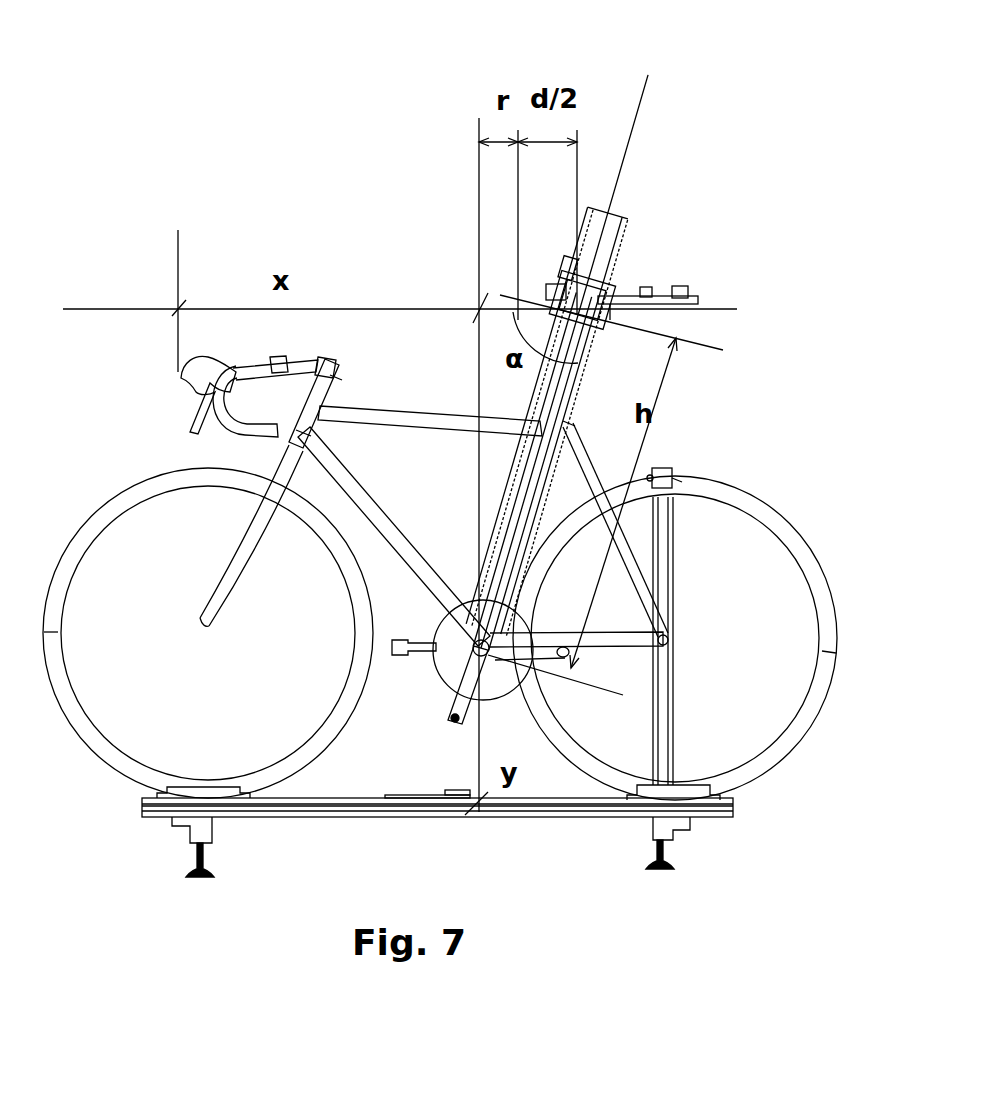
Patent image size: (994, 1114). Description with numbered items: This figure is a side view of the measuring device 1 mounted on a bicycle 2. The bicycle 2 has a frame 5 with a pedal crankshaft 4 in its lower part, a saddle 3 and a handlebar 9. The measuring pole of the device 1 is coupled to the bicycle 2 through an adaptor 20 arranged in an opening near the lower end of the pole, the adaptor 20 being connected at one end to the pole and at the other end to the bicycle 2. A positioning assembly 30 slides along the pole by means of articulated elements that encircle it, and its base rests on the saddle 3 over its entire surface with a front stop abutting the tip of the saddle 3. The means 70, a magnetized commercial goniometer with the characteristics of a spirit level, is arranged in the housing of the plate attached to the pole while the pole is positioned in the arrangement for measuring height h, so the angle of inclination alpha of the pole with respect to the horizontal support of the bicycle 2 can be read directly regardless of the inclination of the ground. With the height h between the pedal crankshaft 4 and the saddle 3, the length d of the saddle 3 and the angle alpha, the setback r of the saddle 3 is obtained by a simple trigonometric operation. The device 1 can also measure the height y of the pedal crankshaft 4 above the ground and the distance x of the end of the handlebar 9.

The device 1 is at (661, 388).
The bicycle 2 is at (287, 120).
The saddle 3 is at (667, 322).
The pedal crankshaft 4 is at (537, 698).
The frame 5 is at (385, 412).
The handlebar 9 is at (182, 374).
The adaptor 20 is at (437, 697).
The positioning assembly 30 is at (623, 199).
The means for measuring the angle of inclination 70 is at (545, 296).